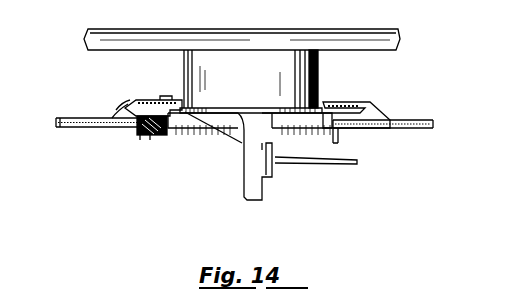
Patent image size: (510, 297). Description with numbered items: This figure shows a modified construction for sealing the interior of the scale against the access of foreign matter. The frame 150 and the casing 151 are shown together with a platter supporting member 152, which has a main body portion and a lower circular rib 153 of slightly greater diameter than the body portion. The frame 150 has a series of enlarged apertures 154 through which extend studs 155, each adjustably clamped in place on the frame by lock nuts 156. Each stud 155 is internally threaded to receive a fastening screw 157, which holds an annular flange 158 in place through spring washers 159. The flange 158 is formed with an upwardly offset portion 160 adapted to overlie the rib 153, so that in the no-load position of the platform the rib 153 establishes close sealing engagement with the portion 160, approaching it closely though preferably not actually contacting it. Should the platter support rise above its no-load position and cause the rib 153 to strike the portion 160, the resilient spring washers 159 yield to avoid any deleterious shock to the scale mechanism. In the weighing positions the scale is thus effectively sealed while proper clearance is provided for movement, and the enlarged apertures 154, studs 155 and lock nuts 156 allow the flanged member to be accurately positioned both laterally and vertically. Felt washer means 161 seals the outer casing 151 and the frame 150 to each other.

The frame 150 is at (68, 128).
The casing 151 is at (63, 118).
The platter supporting member 152 is at (318, 70).
The lower circular rib 153 is at (208, 113).
The enlarged apertures 154 is at (147, 137).
The studs 155 is at (148, 137).
The lock nuts 156 is at (140, 128).
The fastening screw 157 is at (140, 98).
The annular flange 158 is at (167, 100).
The spring washers 159 is at (119, 115).
The upwardly offset portion 160 is at (330, 102).
The felt washer means 161 is at (372, 104).